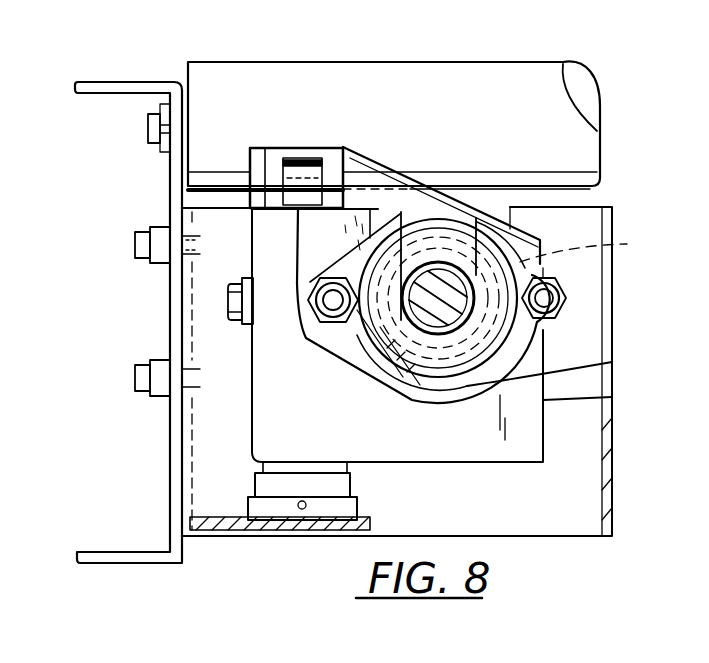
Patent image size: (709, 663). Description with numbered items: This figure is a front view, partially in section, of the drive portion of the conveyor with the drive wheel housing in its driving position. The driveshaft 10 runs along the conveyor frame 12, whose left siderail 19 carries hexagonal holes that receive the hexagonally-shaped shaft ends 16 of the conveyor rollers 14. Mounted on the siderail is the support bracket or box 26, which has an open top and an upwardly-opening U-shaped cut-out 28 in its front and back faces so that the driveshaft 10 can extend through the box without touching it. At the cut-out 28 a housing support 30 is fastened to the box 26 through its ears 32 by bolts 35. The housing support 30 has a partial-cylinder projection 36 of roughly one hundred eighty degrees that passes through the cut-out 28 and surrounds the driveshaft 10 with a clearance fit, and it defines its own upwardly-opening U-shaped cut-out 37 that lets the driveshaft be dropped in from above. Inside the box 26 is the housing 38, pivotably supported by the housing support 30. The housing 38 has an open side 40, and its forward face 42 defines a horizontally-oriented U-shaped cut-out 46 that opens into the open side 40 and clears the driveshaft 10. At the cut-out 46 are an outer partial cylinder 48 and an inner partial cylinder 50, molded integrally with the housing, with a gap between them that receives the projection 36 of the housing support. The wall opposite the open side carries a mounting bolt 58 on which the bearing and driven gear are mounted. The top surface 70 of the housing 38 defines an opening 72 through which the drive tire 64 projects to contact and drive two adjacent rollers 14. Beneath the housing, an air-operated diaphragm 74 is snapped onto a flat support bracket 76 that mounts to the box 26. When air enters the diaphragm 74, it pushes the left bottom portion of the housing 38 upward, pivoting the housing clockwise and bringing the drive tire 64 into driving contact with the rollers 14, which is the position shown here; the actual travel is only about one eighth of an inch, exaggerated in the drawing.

The driveshaft 10 is at (420, 313).
The conveyor frame 12 is at (148, 74).
The conveyor roller 14 is at (541, 62).
The shaft end 16 is at (147, 132).
The left siderail 19 is at (104, 81).
The support bracket or box 26 is at (613, 434).
The U-shaped cut-out 28 is at (508, 212).
The housing support 30 is at (356, 232).
The ear 32 is at (312, 288).
The bolt 35 is at (312, 318).
The projection 36 is at (372, 387).
The U-shaped cut-out 37 is at (403, 226).
The housing 38 is at (478, 463).
The open side 40 is at (613, 394).
The forward face 42 is at (506, 425).
The U-shaped cut-out 46 is at (618, 246).
The outer partial cylinder 48 is at (407, 400).
The inner partial cylinder 50 is at (437, 248).
The mounting bolt 58 is at (228, 300).
The drive tire 64 is at (275, 150).
The top surface 70 is at (298, 150).
The opening 72 is at (332, 150).
The air-operated diaphragm 74 is at (362, 490).
The flat support bracket 76 is at (372, 519).